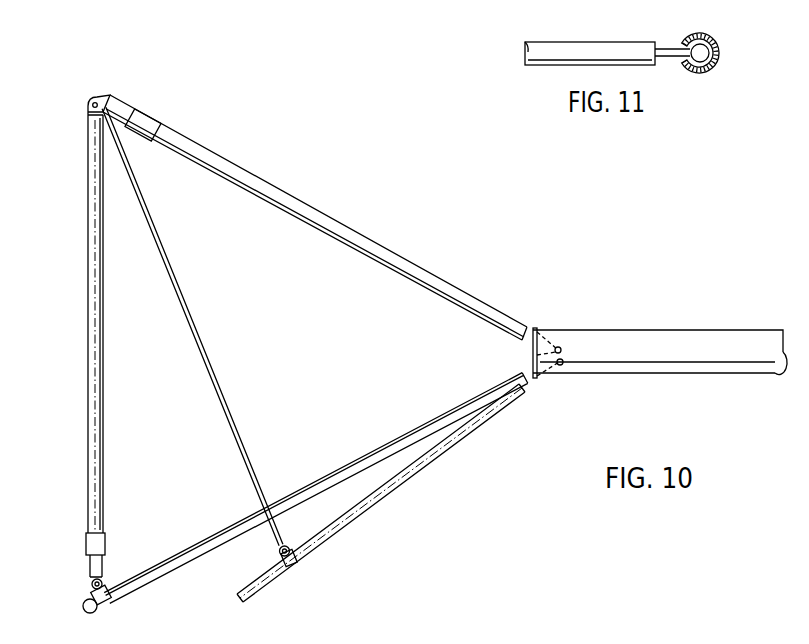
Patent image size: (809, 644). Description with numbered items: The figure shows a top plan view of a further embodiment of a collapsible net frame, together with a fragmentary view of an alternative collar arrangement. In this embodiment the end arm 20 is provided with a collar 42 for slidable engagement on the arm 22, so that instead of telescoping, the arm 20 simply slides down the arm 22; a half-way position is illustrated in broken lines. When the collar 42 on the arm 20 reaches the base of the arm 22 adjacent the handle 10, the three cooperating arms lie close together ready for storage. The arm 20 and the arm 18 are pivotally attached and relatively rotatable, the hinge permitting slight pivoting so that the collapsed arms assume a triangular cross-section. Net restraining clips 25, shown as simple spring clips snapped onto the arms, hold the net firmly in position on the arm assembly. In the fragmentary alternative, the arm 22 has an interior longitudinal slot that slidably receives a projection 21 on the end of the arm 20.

In FIG. 10, the handle 10 is at (590, 338).
In FIG. 10, the arm 18 is at (283, 193).
In FIG. 10, the end arm 20 is at (88, 466).
In FIG. 11, the end arm 20 is at (528, 66).
In FIG. 11, the projection 21 is at (712, 63).
In FIG. 10, the arm 22 is at (240, 534).
In FIG. 11, the arm 22 is at (718, 40).
In FIG. 10, the net restraining clips 25 is at (148, 117).
In FIG. 10, the collar 42 is at (105, 606).